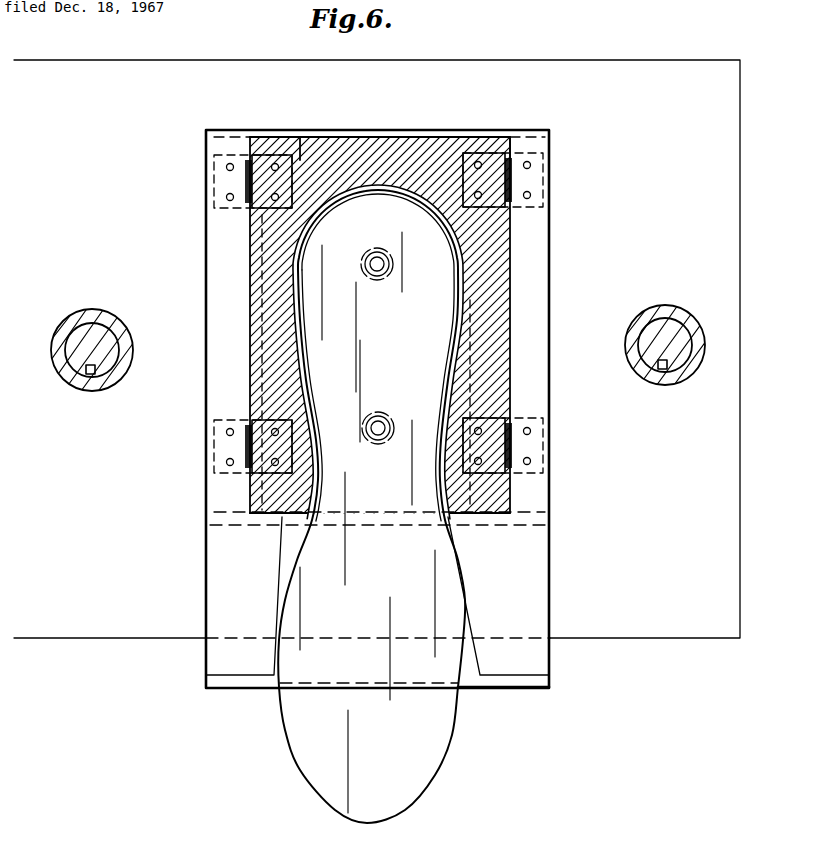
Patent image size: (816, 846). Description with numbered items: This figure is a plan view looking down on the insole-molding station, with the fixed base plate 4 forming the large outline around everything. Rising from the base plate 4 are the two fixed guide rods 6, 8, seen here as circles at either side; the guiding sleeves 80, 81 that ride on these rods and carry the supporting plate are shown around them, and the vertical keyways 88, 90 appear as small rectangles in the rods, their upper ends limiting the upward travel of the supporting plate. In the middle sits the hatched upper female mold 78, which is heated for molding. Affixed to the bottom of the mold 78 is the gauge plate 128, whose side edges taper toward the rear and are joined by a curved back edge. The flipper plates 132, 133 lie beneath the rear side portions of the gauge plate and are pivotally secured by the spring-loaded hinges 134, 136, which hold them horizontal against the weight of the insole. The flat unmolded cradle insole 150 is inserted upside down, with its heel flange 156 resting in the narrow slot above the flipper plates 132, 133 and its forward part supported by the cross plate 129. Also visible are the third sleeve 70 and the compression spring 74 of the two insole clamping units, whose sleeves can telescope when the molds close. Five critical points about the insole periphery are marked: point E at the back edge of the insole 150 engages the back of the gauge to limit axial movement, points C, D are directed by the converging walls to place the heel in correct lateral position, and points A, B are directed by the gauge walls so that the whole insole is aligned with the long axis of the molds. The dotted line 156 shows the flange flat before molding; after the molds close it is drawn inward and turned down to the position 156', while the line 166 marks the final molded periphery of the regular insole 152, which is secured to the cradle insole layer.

The base plate 4 is at (113, 612).
The gauge plate 128 is at (520, 660).
The cross plate 129 is at (473, 688).
The upper female mold 78 is at (378, 155).
The flipper plate 132 is at (318, 138).
The flipper plate 133 is at (455, 138).
The hinge 134 is at (214, 176).
The hinge 136 is at (545, 172).
The cradle insole 150 is at (372, 665).
The third sleeve 70 is at (377, 254).
The compression spring 74 is at (392, 270).
The flange 156 is at (202, 280).
The molded downturned flange portion 156' is at (223, 239).
The final molded periphery 166 is at (305, 305).
The regular insole 152 is at (330, 348).
The guiding sleeve 80 is at (74, 322).
The guide rod 6 is at (70, 340).
The vertical keyway 88 is at (84, 372).
The guiding sleeve 81 is at (672, 312).
The guide rod 8 is at (672, 340).
The vertical keyway 90 is at (670, 370).
The critical point A is at (283, 632).
The critical point B is at (464, 614).
The critical point C is at (314, 298).
The critical point D is at (450, 290).
The critical point E is at (360, 211).